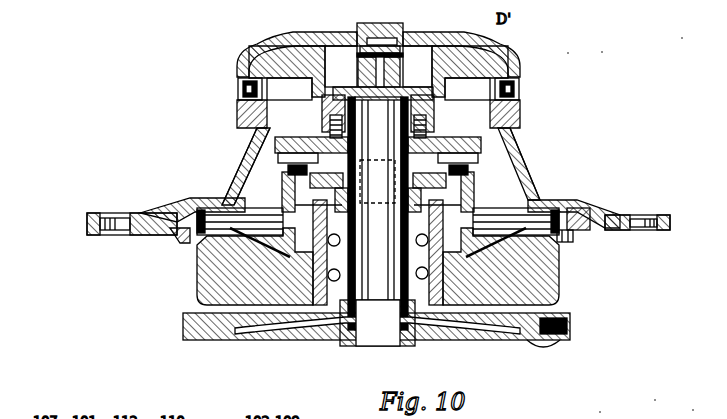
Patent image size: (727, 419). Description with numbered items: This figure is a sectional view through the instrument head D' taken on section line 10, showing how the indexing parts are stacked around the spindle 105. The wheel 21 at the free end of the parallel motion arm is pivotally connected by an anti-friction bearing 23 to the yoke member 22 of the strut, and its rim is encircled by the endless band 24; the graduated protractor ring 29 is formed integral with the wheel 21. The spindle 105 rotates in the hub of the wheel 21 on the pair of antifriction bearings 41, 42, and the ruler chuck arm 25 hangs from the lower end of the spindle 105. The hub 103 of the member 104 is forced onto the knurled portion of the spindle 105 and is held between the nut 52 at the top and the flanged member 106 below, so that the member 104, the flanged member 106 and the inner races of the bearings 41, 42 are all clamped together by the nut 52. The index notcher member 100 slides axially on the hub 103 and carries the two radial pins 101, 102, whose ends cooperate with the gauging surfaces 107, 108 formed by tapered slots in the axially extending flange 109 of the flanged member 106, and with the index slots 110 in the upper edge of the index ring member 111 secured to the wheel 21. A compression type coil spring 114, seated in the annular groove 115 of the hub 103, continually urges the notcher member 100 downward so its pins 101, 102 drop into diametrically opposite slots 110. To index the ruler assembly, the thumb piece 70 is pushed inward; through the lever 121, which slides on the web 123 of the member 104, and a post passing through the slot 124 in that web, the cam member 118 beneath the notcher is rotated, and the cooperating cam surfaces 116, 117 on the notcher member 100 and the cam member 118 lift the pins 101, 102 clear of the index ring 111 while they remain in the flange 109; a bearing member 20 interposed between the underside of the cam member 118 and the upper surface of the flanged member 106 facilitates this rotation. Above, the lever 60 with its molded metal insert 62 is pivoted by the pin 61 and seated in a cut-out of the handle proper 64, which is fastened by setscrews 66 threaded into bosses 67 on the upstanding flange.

The section line 10 is at (378, 4).
The lever 60 is at (373, 24).
The pin 61 is at (410, 44).
The metal insert 62 is at (356, 75).
The nut 52 is at (432, 84).
The handle proper 64 is at (521, 70).
The setscrews 66 is at (240, 86).
The bosses 67 is at (488, 77).
The thumb piece 70 is at (440, 90).
The annular groove 115 is at (322, 118).
The index notcher member 100 is at (328, 128).
The compression type coil spring 114 is at (434, 118).
The lever 121 is at (430, 128).
The web 123 is at (246, 134).
The pin 102 is at (510, 136).
The pin 101 is at (250, 158).
The slot 124 is at (516, 166).
The index slots 110 is at (243, 176).
The index ring member 111 is at (244, 187).
The cam surfaces 116 is at (282, 160).
The gauging surface 107 is at (288, 198).
The gauging surface 108 is at (431, 187).
The axially extending flange 109 is at (476, 180).
The member 104 is at (587, 208).
The protractor ring 29 is at (640, 214).
The cam surfaces 117 is at (377, 187).
The hub 103 is at (378, 213).
The flanged member 106 is at (378, 213).
The antifriction bearing 41 is at (375, 200).
The antifriction bearing 42 is at (383, 200).
The left ball bearing 20 is at (319, 255).
The cam member 118 is at (443, 254).
The yoke member 22 is at (178, 245).
The anti-friction bearing 23 is at (282, 284).
The endless band 24 is at (565, 244).
The wheel 21 is at (560, 300).
The ruler chuck arm 25 is at (568, 334).
The spindle 105 is at (355, 346).